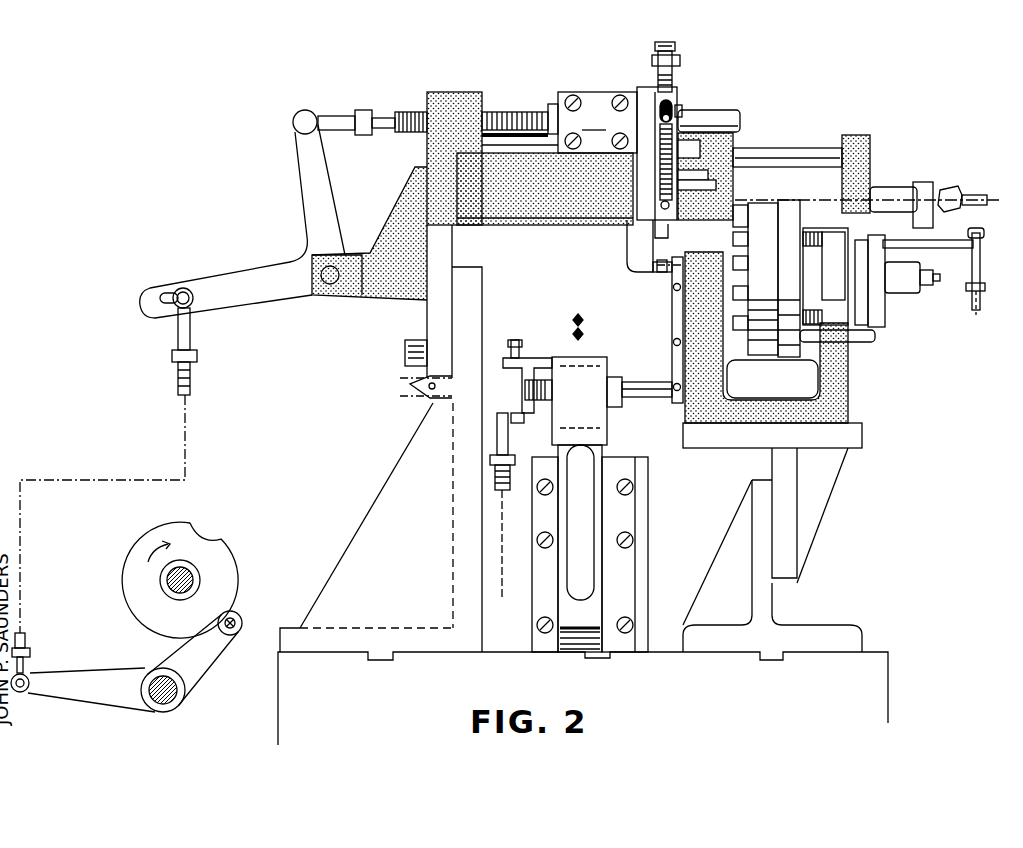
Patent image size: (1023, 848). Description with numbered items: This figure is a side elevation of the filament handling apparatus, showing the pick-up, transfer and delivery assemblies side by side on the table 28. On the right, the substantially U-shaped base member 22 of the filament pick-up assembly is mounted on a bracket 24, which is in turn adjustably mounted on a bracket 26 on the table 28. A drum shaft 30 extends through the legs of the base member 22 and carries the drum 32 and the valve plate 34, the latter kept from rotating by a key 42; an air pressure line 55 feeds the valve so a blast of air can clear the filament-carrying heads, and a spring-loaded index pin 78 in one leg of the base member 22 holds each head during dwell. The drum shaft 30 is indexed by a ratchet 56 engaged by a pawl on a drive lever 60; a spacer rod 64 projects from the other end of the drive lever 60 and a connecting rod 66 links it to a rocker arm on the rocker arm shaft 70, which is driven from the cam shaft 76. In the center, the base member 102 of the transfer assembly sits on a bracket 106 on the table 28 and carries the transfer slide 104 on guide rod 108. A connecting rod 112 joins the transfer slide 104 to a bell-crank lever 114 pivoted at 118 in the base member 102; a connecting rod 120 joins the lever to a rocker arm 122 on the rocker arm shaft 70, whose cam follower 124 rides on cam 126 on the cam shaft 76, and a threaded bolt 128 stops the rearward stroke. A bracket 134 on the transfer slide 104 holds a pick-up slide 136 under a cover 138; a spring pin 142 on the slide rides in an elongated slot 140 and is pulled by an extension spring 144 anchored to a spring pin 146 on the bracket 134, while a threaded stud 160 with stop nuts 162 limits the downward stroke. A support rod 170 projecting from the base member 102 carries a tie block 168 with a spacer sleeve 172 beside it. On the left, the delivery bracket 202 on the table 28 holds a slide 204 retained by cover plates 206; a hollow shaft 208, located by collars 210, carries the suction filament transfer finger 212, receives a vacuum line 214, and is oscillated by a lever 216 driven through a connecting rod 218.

The base member 22 is at (846, 390).
The bracket 24 is at (832, 482).
The bracket 26 is at (776, 600).
The table 28 is at (880, 655).
The drum shaft 30 is at (938, 284).
The drum 32 is at (768, 210).
The valve plate 34 is at (790, 210).
The key 42 is at (832, 282).
The air pressure line 55 is at (870, 338).
The ratchet 56 is at (868, 318).
The drive lever 60 is at (880, 302).
The spacer rod 64 is at (960, 250).
The connecting rod 66 is at (980, 272).
The rocker arm shaft 70 is at (172, 700).
The cam shaft 76 is at (190, 573).
The index pin 78 is at (728, 352).
The base member 102 is at (458, 92).
The transfer slide 104 is at (600, 90).
The bracket 106 is at (478, 283).
The guide rod 108 is at (730, 110).
The connecting rod 112 is at (378, 112).
The bell-crank lever 114 is at (305, 196).
The pivot 118 is at (330, 283).
The connecting rod 120 is at (195, 352).
The rocker arm 122 is at (200, 680).
The cam follower 124 is at (240, 620).
The cam 126 is at (226, 580).
The threaded bolt 128 is at (520, 110).
The bracket 134 is at (598, 121).
The pick-up slide 136 is at (675, 88).
The cover 138 is at (676, 107).
The elongated slot 140 is at (682, 110).
The spring pin 142 is at (662, 112).
The extension spring 144 is at (660, 165).
The spring pin 146 is at (660, 204).
The threaded stud 160 is at (672, 46).
The stop nuts 162 is at (678, 60).
The tie block 168 is at (866, 150).
The support rod 170 is at (782, 150).
The spacer sleeve 172 is at (885, 190).
The bracket 202 is at (645, 525).
The slide 204 is at (592, 440).
The cover plates 206 is at (626, 566).
The hollow shaft 208 is at (654, 380).
The collars 210 is at (540, 392).
The suction filament transfer finger 212 is at (672, 312).
The vacuum line 214 is at (424, 392).
The lever 216 is at (520, 385).
The connecting rod 218 is at (495, 440).